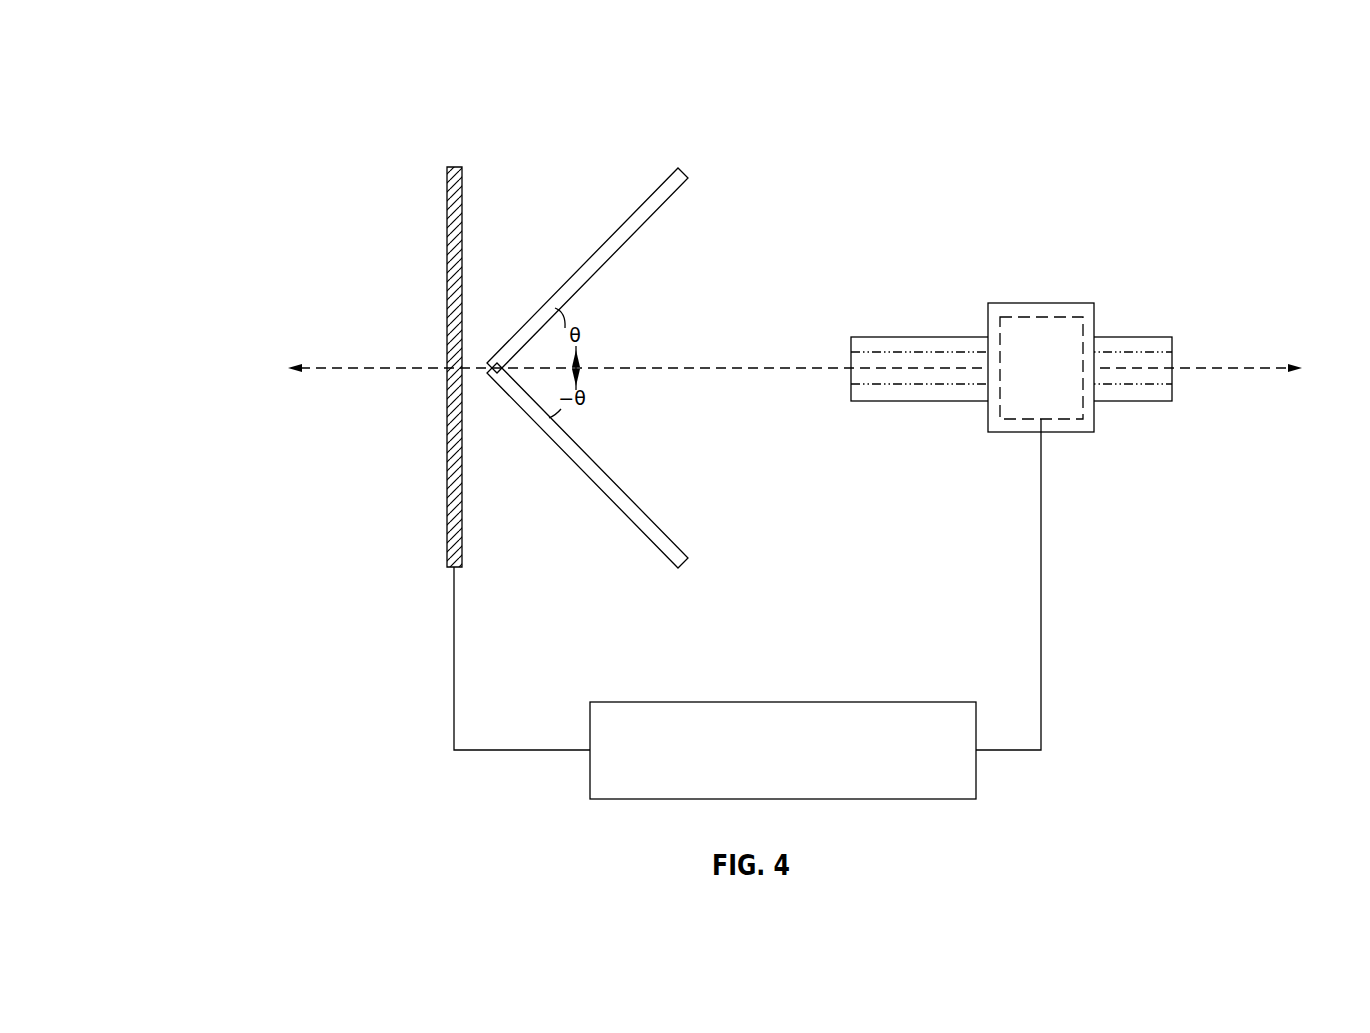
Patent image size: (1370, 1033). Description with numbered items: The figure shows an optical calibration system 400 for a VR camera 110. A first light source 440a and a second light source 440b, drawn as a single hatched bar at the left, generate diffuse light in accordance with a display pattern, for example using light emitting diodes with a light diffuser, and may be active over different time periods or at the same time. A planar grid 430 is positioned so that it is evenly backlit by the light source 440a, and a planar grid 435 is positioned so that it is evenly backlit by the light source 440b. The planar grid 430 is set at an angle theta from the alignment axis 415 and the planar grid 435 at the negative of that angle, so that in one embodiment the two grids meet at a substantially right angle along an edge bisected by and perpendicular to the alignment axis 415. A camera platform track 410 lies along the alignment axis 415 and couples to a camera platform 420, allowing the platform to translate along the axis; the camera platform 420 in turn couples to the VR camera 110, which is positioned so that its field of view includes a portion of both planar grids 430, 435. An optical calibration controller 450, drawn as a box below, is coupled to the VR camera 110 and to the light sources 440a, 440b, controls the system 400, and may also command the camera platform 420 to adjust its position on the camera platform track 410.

The optical calibration system 400 is at (230, 61).
The VR camera 110 is at (1070, 317).
The camera platform track 410 is at (1172, 392).
The alignment axis 415 is at (350, 369).
The camera platform 420 is at (1055, 303).
The planar grid 430 is at (603, 240).
The planar grid 435 is at (622, 510).
The first light source 440a is at (447, 218).
The second light source 440b is at (447, 507).
The optical calibration controller 450 is at (747, 609).